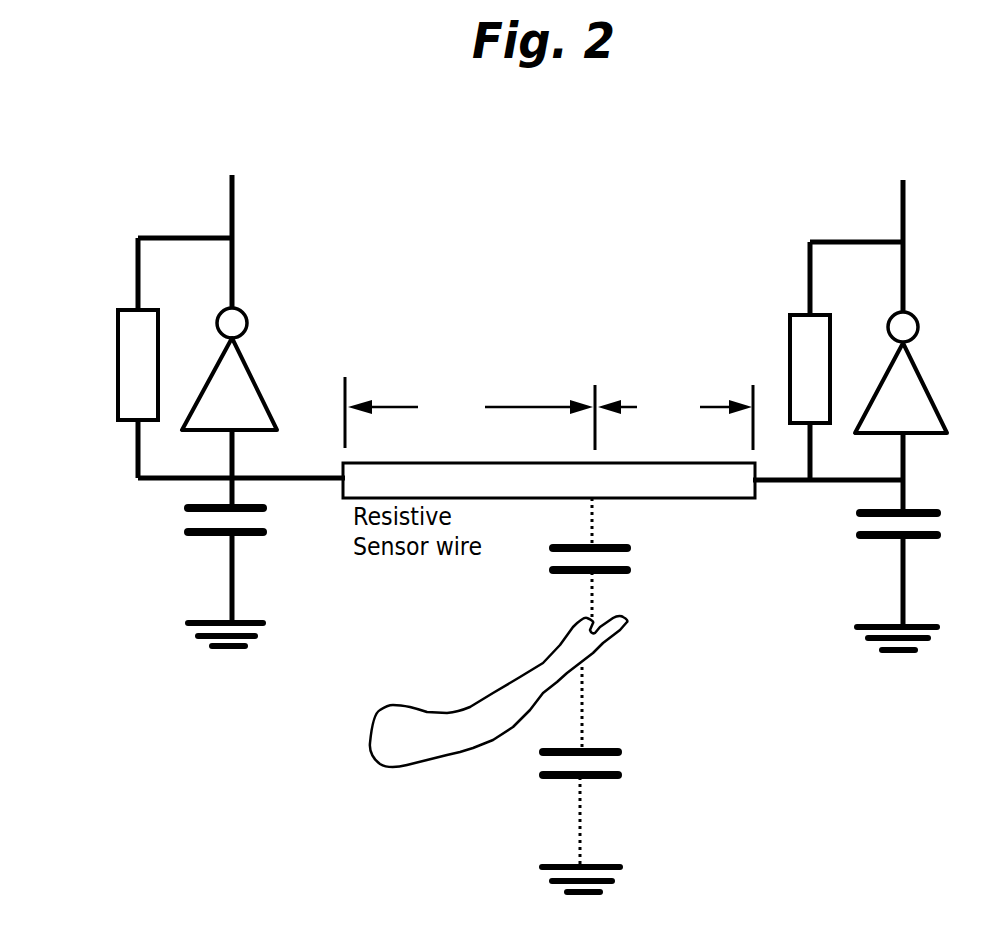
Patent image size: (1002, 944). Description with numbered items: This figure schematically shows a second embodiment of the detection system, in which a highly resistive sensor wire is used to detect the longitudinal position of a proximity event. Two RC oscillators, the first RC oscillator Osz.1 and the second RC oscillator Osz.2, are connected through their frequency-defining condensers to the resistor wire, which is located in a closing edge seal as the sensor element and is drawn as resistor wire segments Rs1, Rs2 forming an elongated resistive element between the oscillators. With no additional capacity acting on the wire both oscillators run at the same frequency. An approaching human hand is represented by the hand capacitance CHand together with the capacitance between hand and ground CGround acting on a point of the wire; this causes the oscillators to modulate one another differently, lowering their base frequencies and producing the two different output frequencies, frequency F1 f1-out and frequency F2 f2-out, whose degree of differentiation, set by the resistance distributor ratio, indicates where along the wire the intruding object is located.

The frequency F1 f1-out is at (226, 223).
The frequency F2 f2-out is at (896, 227).
The RC oscillator Osz.1 is at (231, 442).
The RC oscillator Osz.2 is at (870, 446).
The resistor wire segment Rs1 is at (470, 413).
The resistor wire segment Rs2 is at (675, 417).
The hand capacitance CHand is at (623, 559).
The capacitance between hand and ground CGround is at (641, 779).